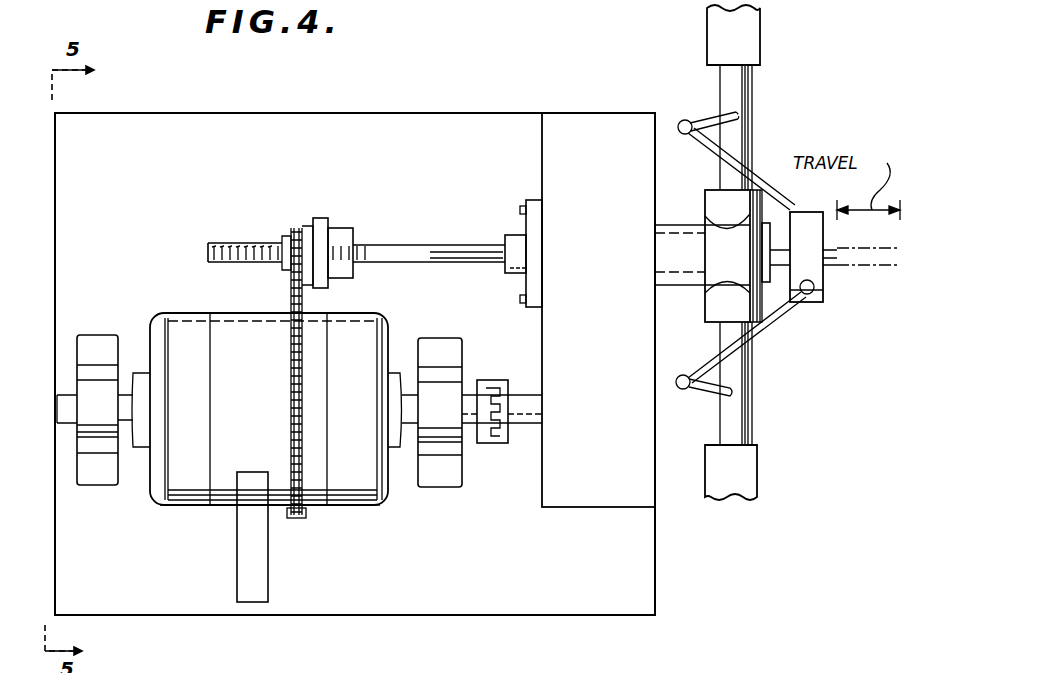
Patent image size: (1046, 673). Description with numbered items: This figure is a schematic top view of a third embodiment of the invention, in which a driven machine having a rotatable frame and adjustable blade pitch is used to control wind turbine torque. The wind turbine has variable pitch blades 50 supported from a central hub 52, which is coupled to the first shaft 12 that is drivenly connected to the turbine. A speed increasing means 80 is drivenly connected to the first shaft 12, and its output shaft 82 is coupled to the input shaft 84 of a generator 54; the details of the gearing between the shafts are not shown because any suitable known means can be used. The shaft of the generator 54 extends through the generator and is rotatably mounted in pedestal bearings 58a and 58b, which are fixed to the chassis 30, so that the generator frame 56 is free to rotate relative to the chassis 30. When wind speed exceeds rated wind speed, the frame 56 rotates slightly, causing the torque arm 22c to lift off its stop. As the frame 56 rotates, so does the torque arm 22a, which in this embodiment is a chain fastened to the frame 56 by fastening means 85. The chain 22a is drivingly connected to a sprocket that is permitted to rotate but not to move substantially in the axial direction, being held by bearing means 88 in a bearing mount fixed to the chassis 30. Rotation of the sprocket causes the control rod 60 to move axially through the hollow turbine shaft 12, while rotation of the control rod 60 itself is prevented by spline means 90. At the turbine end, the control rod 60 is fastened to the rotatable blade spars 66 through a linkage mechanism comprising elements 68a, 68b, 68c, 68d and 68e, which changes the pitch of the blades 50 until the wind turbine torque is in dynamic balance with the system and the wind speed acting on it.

The first shaft 12 is at (683, 288).
The torque arm 22a is at (287, 293).
The torque arm 22c is at (238, 557).
The chassis 30 is at (325, 605).
The variable pitch blades 50 is at (745, 27).
The central hub 52 is at (710, 208).
The generator 54 is at (262, 410).
The generator frame 56 is at (357, 508).
The pedestal bearing 58a is at (447, 480).
The pedestal bearing 58b is at (105, 473).
The control rod 60 is at (219, 243).
The rotatable blade spars 66 is at (737, 90).
The linkage element 68a is at (812, 200).
The linkage element 68b is at (823, 297).
The linkage element 68c is at (752, 333).
The linkage element 68d is at (682, 392).
The linkage element 68e is at (725, 398).
The speed increasing means 80 is at (602, 507).
The output shaft 82 is at (527, 428).
The input shaft 84 is at (467, 395).
The fastening means 85 is at (293, 520).
The bearing means 88 is at (322, 228).
The spline means 90 is at (520, 238).